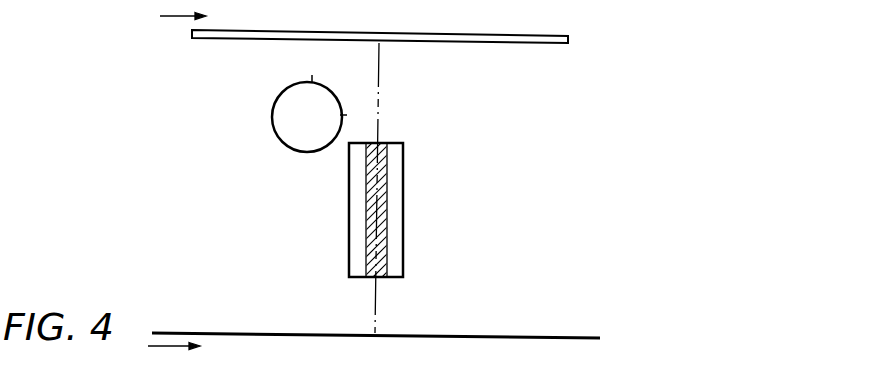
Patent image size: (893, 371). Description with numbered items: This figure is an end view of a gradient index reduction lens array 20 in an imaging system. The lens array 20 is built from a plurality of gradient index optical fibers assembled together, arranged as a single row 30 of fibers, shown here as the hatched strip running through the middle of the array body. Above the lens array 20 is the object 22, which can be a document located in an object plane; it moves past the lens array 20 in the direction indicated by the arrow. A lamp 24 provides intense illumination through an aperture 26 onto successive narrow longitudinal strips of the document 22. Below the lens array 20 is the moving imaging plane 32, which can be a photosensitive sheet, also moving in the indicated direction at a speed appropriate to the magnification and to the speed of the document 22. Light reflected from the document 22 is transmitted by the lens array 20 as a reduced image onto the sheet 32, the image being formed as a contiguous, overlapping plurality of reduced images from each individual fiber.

The reduction lens array 20 is at (403, 247).
The object 22 is at (527, 43).
The lamp 24 is at (282, 145).
The aperture 26 is at (331, 89).
The single row of optical fibers 30 is at (383, 173).
The imaging plane 32 is at (512, 335).